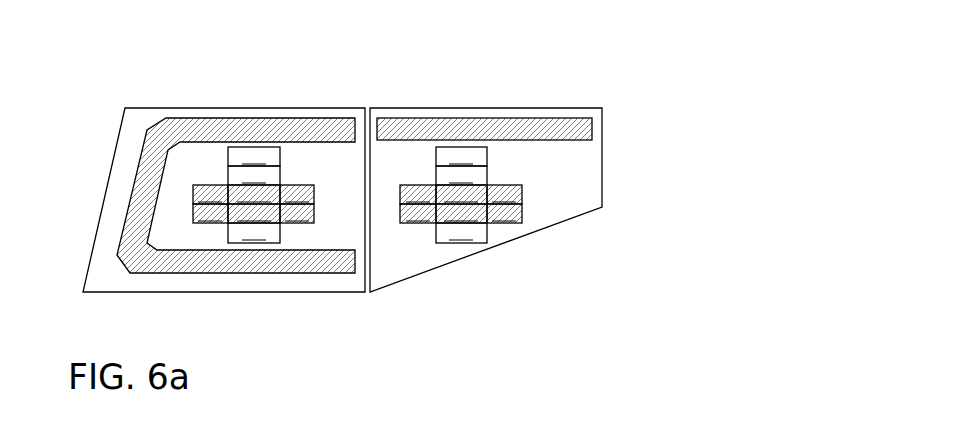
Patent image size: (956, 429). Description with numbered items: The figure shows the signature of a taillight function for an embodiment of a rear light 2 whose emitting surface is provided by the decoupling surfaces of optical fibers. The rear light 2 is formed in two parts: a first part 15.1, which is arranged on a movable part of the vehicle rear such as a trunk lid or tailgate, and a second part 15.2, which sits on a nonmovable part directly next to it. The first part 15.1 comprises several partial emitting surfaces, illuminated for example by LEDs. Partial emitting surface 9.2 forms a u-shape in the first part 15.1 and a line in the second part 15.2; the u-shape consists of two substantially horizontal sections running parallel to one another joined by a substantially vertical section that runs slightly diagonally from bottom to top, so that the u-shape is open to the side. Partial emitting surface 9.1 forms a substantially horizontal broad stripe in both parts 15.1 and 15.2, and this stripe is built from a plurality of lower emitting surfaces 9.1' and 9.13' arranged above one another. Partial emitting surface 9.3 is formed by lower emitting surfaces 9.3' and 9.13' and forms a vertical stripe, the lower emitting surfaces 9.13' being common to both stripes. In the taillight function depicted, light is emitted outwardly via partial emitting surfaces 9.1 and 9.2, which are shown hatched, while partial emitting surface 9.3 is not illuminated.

The rear light 2 is at (572, 61).
The first part 15.1 is at (119, 101).
The second part 15.2 is at (609, 121).
The partial emitting surface 9.1 is at (357, 263).
The partial emitting surface 9.2 is at (184, 129).
The partial emitting surface 9.3 is at (358, 153).
The lower emitting surface 9.1' is at (357, 204).
The lower emitting surface 9.13' is at (357, 204).
The lower emitting surface 9.3' is at (357, 195).